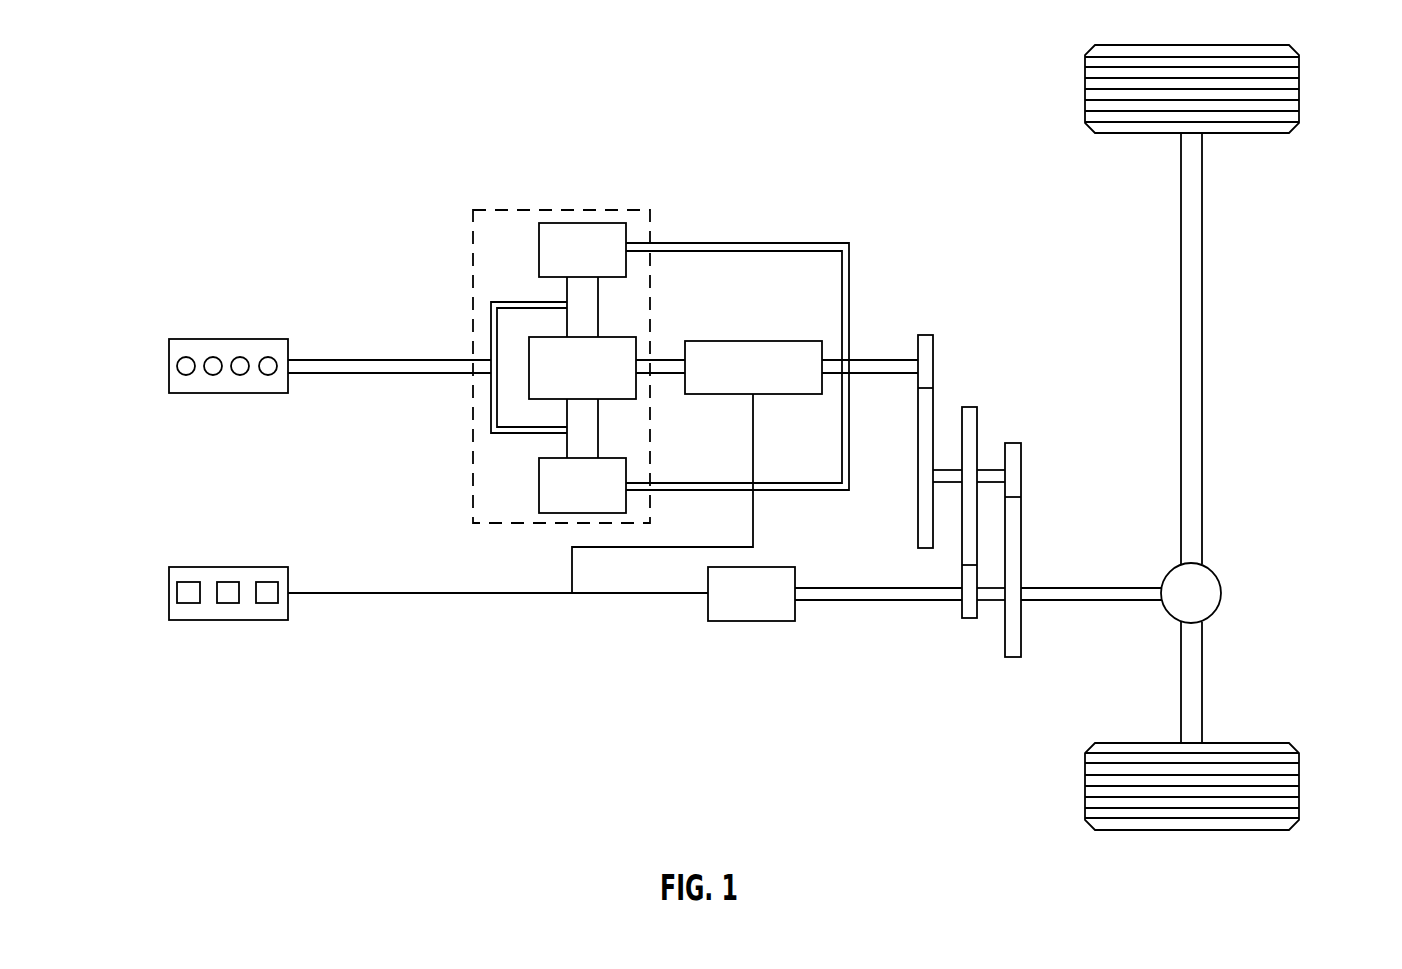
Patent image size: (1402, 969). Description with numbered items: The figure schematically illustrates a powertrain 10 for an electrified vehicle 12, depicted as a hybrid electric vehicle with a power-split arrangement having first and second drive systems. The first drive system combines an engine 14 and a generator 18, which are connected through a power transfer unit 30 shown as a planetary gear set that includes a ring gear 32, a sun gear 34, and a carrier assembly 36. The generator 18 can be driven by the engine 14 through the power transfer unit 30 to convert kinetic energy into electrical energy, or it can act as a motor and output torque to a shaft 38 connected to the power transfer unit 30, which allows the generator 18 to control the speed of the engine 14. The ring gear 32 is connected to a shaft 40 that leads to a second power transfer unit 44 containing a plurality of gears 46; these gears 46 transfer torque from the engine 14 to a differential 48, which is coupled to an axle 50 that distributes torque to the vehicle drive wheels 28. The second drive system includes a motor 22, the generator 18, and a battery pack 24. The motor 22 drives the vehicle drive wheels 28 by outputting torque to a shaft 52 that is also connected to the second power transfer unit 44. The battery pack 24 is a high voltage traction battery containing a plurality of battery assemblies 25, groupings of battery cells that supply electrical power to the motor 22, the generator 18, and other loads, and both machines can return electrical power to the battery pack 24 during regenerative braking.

The powertrain 10 is at (280, 113).
The electrified vehicle 12 is at (768, 191).
The engine 14 is at (228, 394).
The generator 18 is at (753, 341).
The motor 22 is at (750, 622).
The battery pack 24 is at (169, 592).
The battery assemblies 25 is at (188, 597).
The vehicle drive wheels 28 is at (1299, 88).
The power transfer unit 30 is at (537, 205).
The ring gear 32 is at (583, 222).
The sun gear 34 is at (640, 390).
The carrier assembly 36 is at (491, 398).
The shaft 38 is at (660, 360).
The shaft 40 is at (895, 376).
The second power transfer unit 44 is at (1045, 290).
The gears 46 is at (925, 335).
The differential 48 is at (1223, 593).
The axle 50 is at (1202, 383).
The shaft 52 is at (897, 603).